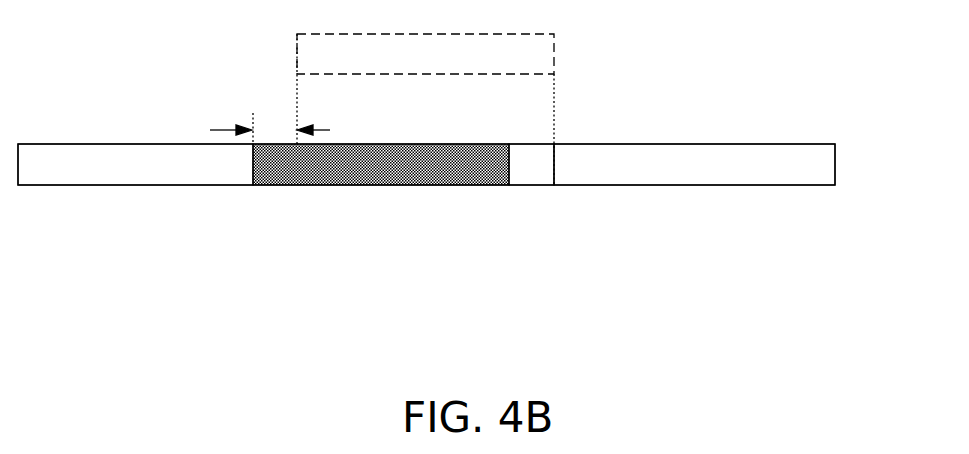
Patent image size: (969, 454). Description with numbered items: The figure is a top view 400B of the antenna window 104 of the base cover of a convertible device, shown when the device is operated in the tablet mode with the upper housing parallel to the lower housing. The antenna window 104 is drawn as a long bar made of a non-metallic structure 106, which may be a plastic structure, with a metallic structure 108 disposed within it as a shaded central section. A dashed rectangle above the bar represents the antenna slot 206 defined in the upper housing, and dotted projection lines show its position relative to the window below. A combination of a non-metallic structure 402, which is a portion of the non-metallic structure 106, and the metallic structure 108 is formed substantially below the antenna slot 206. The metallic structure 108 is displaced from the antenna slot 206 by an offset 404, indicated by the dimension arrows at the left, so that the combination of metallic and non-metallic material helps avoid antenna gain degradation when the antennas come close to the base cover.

The antenna window 104 is at (859, 143).
The non-metallic structure 106 is at (153, 186).
The metallic structure 108 is at (433, 186).
The antenna slot 206 is at (555, 51).
The non-metallic structure 402 is at (528, 186).
The offset 404 is at (270, 128).
The top view 400B is at (641, 343).